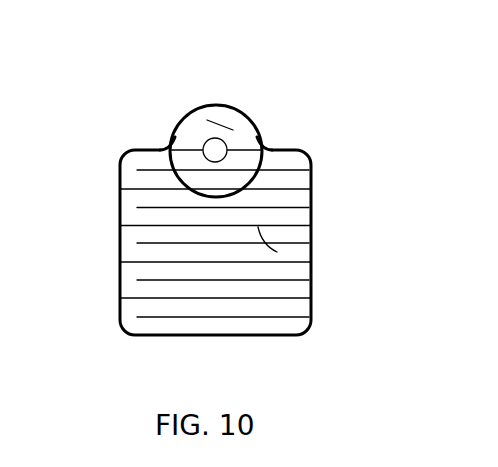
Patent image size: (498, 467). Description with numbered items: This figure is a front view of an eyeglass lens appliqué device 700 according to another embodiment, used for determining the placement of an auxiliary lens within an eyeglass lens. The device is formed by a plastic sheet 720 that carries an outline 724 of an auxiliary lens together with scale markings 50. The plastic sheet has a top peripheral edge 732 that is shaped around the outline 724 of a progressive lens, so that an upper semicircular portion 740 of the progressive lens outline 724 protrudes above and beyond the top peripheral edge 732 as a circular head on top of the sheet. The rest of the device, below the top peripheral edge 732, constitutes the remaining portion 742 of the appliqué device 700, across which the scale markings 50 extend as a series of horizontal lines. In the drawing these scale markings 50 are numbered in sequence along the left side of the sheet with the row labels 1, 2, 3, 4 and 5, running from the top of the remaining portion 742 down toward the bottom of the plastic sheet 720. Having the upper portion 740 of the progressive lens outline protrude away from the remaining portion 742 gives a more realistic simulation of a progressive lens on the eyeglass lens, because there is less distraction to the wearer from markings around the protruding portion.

The eyeglass lens appliqué device 700 is at (173, 96).
The plastic sheet 720 is at (238, 337).
The outline of an auxiliary lens 724 is at (255, 178).
The top peripheral edge 732 is at (264, 146).
The upper semicircular portion 740 is at (224, 124).
The remaining portion 742 is at (266, 241).
The scale markings 50 is at (179, 239).
The row 1 is at (216, 170).
The row 2 is at (216, 208).
The row 3 is at (216, 244).
The row 4 is at (216, 281).
The row 5 is at (216, 317).